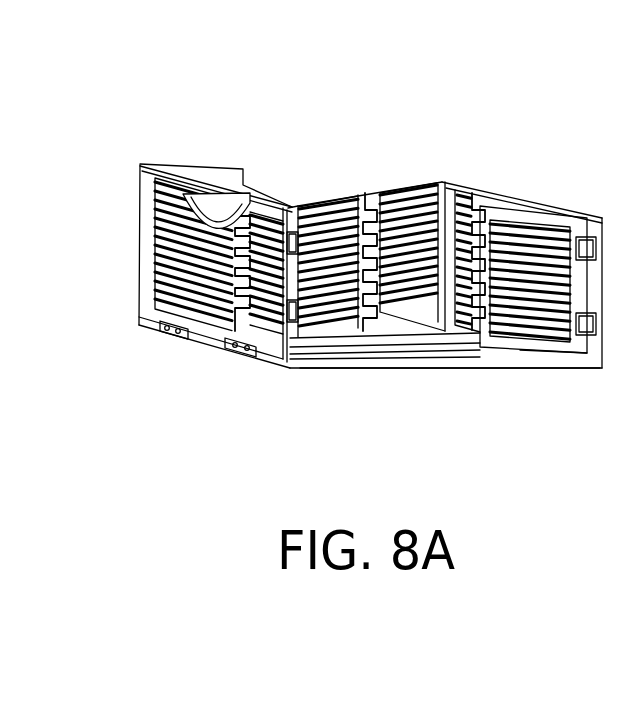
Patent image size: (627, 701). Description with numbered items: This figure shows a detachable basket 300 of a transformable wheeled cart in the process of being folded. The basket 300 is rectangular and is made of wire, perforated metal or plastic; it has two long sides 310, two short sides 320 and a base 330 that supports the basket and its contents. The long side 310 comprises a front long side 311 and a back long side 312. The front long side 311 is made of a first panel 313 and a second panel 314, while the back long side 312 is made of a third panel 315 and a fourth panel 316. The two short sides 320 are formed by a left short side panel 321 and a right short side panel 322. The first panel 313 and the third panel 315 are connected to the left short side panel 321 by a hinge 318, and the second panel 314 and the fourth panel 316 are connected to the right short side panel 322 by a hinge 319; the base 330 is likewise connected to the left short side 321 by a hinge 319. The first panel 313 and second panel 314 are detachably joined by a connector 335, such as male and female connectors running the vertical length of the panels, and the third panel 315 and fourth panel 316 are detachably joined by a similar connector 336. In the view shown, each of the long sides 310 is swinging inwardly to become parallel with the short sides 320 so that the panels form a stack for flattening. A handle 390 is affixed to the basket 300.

The detachable basket 300 is at (503, 75).
The third panel 315 is at (203, 151).
The hinge 318 is at (291, 198).
The back long side 312 is at (371, 165).
The fourth panel 316 is at (428, 182).
The connector 336 is at (476, 205).
The right short side panel 322 is at (512, 193).
The short sides 320 is at (150, 281).
The handle 390 is at (163, 212).
The left short side panel 321 is at (152, 252).
The hinge 319 is at (240, 345).
The first panel 313 is at (330, 325).
The front long side 311 is at (372, 388).
The connector 335 is at (375, 330).
The long sides 310 is at (475, 365).
The base 330 is at (446, 409).
The second panel 314 is at (538, 337).